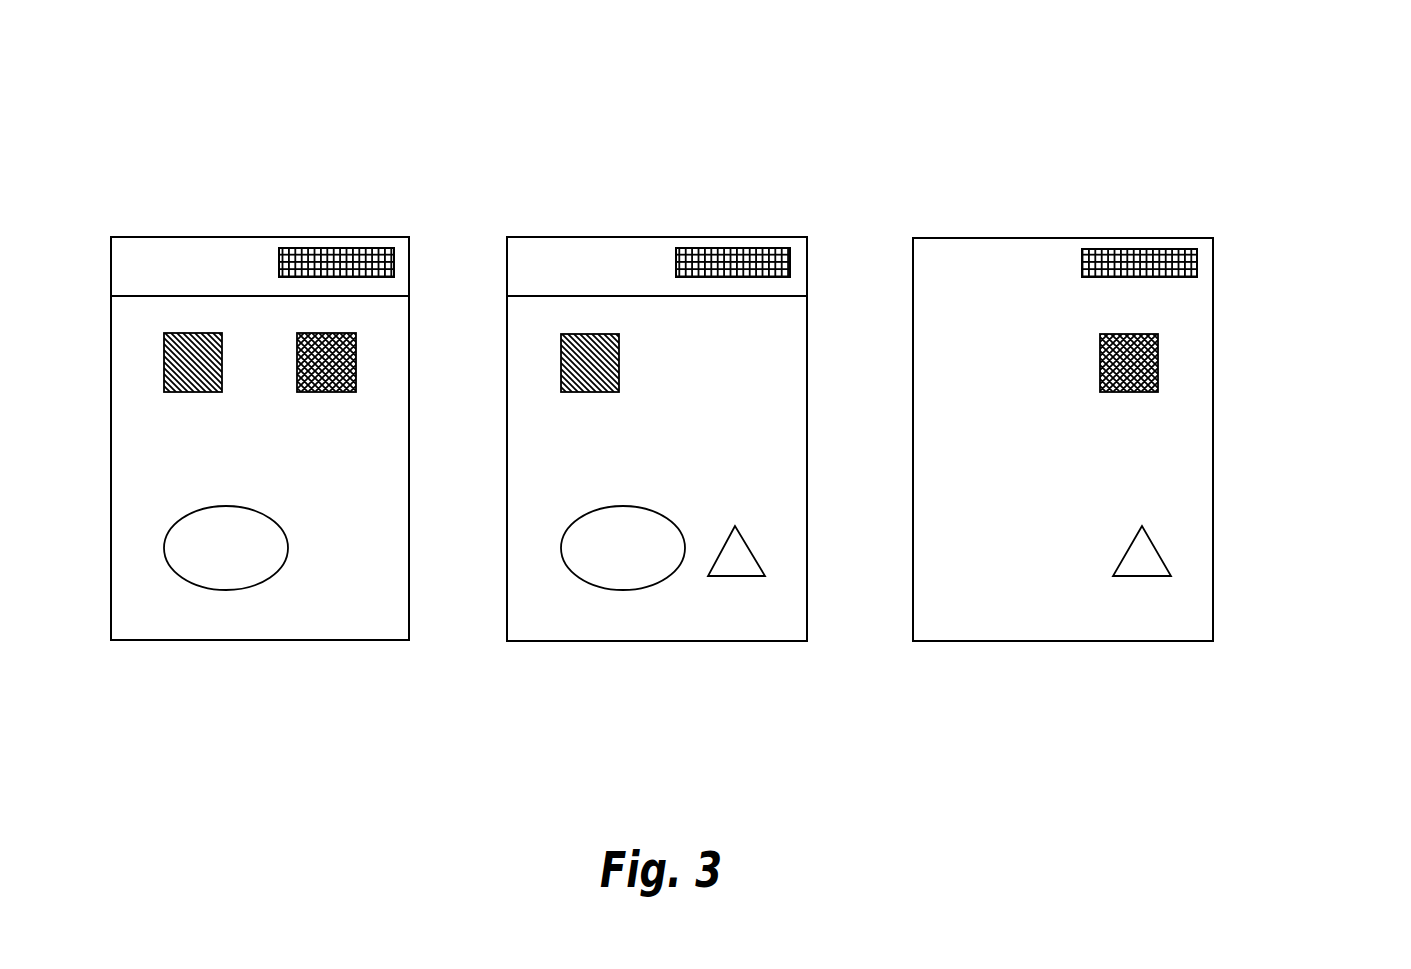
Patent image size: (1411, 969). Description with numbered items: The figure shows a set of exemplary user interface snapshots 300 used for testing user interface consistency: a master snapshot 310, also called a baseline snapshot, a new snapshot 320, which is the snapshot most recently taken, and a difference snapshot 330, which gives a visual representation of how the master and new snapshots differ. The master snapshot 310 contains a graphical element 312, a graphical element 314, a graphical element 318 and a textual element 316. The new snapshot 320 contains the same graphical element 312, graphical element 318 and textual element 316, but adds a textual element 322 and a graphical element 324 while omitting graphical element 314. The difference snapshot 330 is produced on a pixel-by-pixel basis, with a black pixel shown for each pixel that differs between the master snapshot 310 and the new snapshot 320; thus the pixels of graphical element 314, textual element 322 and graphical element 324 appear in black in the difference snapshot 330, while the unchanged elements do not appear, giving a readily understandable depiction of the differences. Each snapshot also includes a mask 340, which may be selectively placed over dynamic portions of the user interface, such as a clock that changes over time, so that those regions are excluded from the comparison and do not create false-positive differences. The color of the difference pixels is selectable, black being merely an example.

The snapshot comparison diagram 300 is at (1258, 123).
The master snapshot 310 is at (130, 236).
The new snapshot 320 is at (549, 236).
The difference snapshot 330 is at (944, 237).
The mask 340 is at (387, 277).
The graphical element 312 is at (164, 385).
The graphical element 314 is at (320, 392).
The textual element 316 is at (169, 448).
The graphical element 318 is at (166, 551).
The textual element 322 is at (689, 446).
The graphical element 324 is at (745, 540).